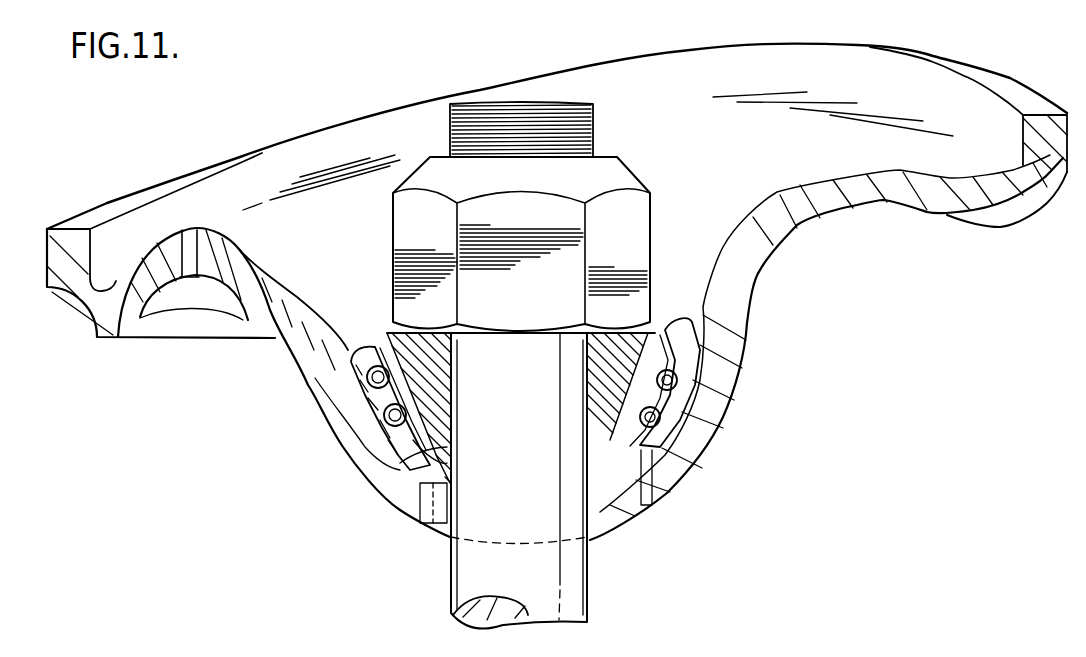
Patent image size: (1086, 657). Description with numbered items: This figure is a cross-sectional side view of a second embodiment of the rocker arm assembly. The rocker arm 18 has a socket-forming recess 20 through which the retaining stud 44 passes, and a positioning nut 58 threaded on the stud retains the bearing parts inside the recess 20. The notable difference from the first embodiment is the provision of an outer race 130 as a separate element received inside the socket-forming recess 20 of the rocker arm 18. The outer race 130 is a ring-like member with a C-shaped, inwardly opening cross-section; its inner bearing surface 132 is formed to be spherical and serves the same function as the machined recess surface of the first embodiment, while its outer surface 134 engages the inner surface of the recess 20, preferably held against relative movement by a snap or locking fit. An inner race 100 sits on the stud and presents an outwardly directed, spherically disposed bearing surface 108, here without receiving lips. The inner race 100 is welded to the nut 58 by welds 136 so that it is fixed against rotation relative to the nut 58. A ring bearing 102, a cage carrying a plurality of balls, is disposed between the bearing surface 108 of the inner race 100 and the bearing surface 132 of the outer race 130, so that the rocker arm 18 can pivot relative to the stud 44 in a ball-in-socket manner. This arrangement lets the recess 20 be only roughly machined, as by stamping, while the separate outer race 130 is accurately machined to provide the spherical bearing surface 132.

The rocker arm 18 is at (860, 198).
The socket-forming recess 20 is at (714, 252).
The retaining stud 44 is at (587, 130).
The positioning nut 58 is at (645, 208).
The inner race 100 is at (650, 318).
The ring bearing 102 is at (688, 412).
The bearing surface 108 is at (590, 453).
The outer race 130 is at (360, 348).
The inner bearing surface 132 is at (400, 463).
The outer surface 134 is at (665, 490).
The welds 136 is at (386, 330).